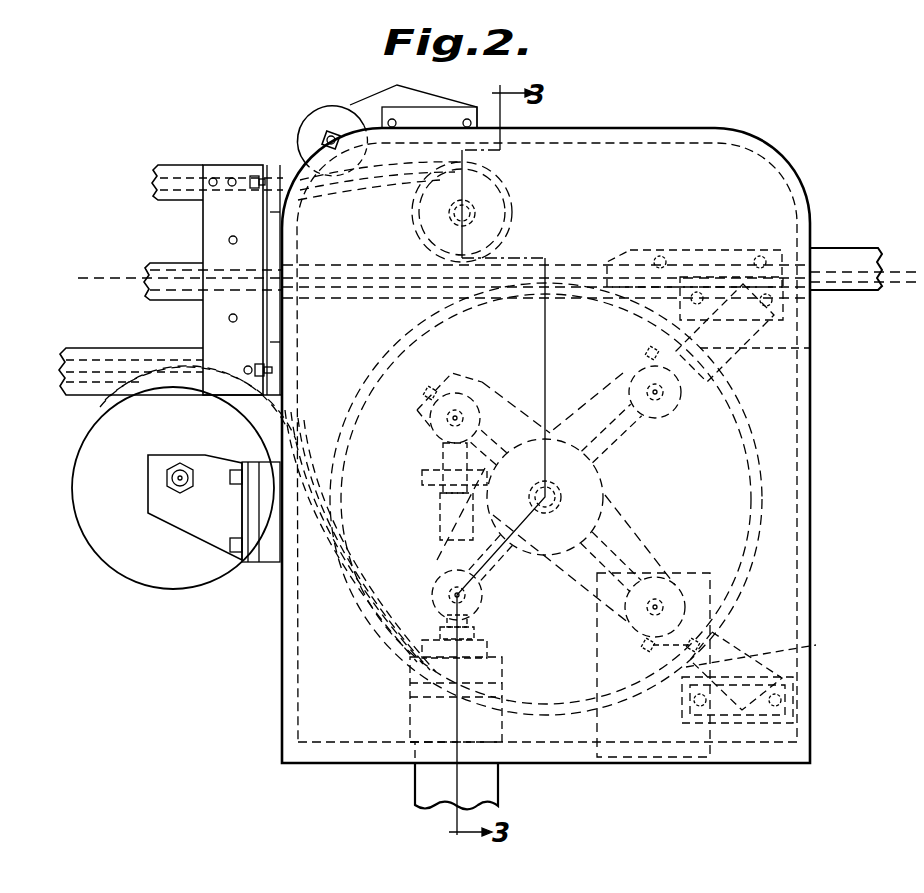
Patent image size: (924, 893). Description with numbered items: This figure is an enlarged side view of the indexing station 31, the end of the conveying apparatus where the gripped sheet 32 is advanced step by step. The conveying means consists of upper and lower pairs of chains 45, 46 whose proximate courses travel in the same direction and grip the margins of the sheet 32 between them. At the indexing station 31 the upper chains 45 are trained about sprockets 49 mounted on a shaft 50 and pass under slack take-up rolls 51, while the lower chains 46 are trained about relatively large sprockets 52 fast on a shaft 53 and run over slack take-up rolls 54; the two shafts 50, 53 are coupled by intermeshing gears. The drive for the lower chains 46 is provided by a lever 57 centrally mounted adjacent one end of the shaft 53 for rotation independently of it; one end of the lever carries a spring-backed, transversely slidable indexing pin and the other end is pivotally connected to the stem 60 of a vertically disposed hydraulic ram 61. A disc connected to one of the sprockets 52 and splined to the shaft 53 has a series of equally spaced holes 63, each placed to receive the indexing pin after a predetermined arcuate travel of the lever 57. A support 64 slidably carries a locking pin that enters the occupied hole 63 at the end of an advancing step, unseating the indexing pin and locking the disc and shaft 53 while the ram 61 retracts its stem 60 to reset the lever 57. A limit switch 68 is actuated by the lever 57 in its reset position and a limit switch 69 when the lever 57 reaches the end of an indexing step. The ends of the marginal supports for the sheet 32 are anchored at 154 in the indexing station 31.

The indexing station 31 is at (748, 129).
The sheet 32 is at (110, 270).
The upper chains 45 is at (378, 176).
The lower chains 46 is at (288, 430).
The sprockets 49 is at (513, 192).
The shaft 50 is at (478, 217).
The slack take-up rolls 51 is at (305, 112).
The sprockets 52 is at (760, 530).
The shaft 53 is at (562, 498).
The slack take-up rolls 54 is at (158, 568).
The lever 57 is at (642, 455).
The stem 60 is at (476, 628).
The hydraulic ram 61 is at (425, 790).
The holes 63 is at (451, 374).
The support 64 is at (648, 732).
The limit switch 68 is at (790, 350).
The limit switch 69 is at (795, 660).
The anchorage 154 is at (760, 258).